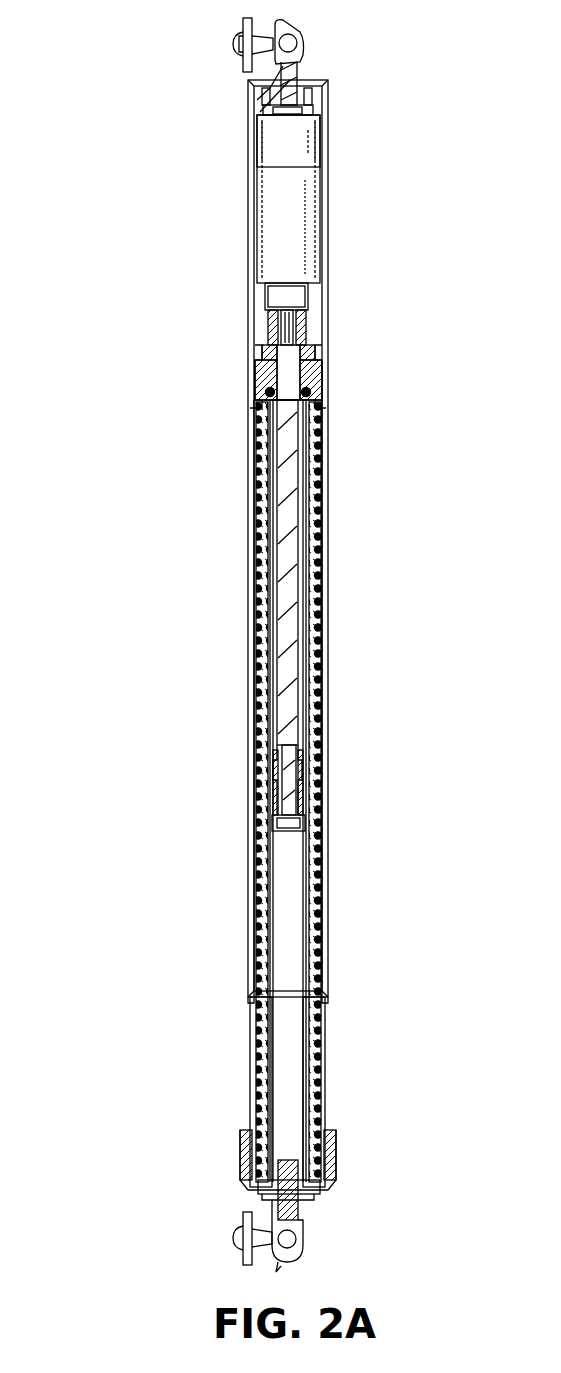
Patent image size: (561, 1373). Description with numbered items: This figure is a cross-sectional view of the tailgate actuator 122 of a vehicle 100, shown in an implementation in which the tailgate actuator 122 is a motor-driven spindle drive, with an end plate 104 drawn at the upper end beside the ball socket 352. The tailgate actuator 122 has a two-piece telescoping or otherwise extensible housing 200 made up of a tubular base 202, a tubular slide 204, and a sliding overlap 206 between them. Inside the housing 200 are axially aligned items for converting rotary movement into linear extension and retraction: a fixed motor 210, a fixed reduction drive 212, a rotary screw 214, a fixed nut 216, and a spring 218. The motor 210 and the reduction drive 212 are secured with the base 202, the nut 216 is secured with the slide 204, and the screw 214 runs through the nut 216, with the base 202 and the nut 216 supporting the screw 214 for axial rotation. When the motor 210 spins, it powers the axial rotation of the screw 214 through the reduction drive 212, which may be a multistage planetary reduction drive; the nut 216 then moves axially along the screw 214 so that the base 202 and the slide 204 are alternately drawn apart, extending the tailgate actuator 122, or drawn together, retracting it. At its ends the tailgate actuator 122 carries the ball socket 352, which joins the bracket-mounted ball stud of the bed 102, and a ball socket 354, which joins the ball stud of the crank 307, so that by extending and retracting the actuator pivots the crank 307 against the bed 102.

The vehicle 100 is at (147, 30).
The bed 102 is at (240, 58).
The first end plate 104 is at (240, 23).
The tailgate actuator 122 is at (328, 114).
The housing 200 is at (328, 144).
The tubular base 202 is at (328, 172).
The tubular slide 204 is at (327, 1094).
The sliding overlap 206 is at (328, 822).
The motor 210 is at (328, 238).
The reduction drive 212 is at (328, 303).
The rotary screw 214 is at (328, 729).
The fixed nut 216 is at (328, 766).
The spring 218 is at (328, 800).
The crank 307 is at (240, 1219).
The ball socket 352 is at (303, 40).
The ball socket 354 is at (303, 1236).